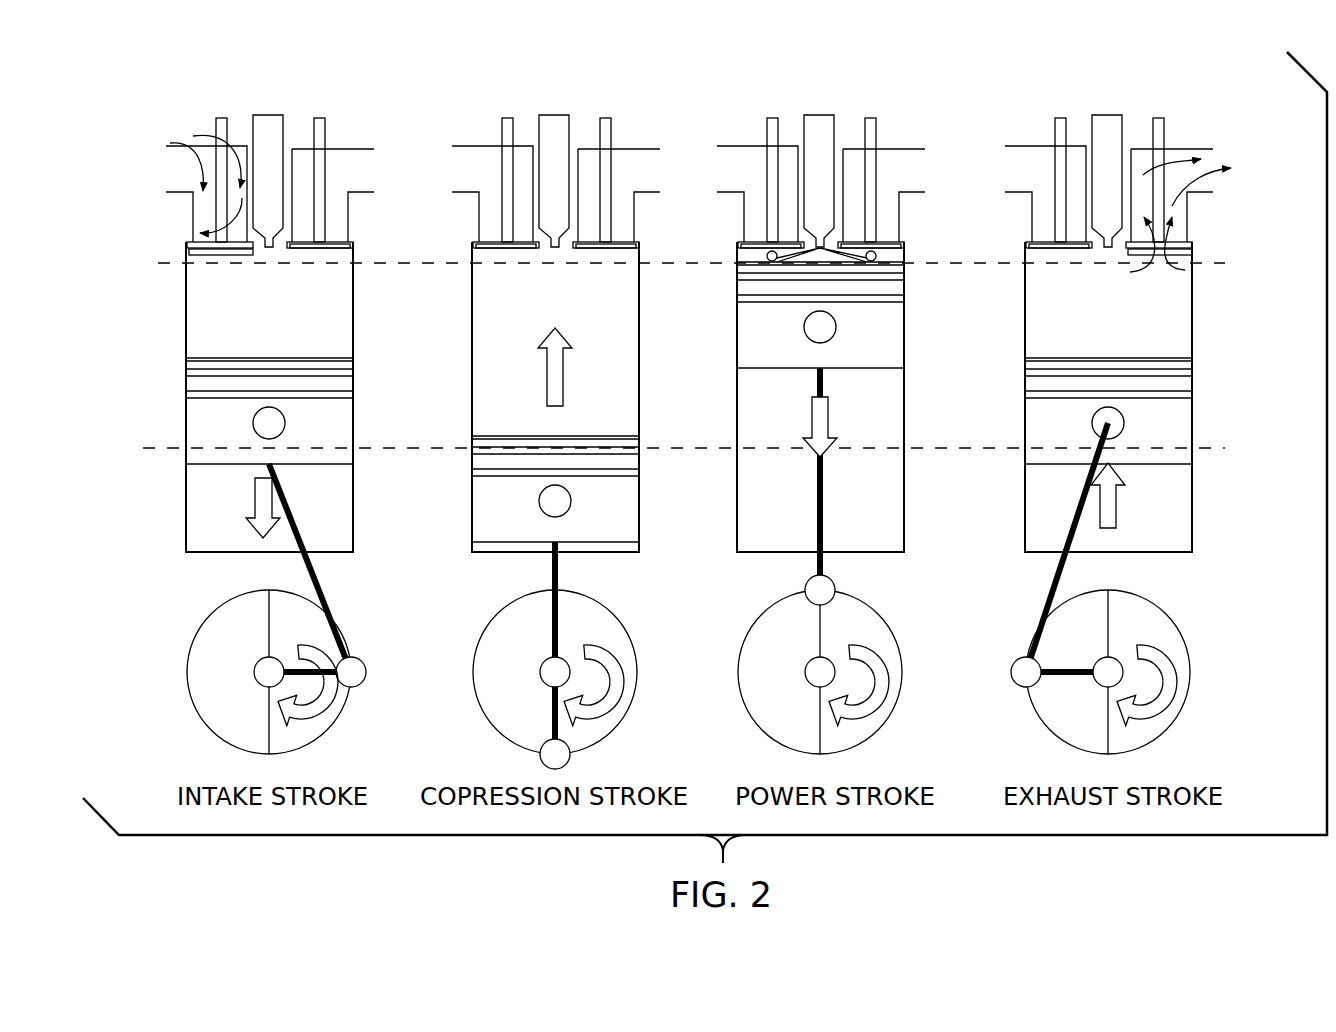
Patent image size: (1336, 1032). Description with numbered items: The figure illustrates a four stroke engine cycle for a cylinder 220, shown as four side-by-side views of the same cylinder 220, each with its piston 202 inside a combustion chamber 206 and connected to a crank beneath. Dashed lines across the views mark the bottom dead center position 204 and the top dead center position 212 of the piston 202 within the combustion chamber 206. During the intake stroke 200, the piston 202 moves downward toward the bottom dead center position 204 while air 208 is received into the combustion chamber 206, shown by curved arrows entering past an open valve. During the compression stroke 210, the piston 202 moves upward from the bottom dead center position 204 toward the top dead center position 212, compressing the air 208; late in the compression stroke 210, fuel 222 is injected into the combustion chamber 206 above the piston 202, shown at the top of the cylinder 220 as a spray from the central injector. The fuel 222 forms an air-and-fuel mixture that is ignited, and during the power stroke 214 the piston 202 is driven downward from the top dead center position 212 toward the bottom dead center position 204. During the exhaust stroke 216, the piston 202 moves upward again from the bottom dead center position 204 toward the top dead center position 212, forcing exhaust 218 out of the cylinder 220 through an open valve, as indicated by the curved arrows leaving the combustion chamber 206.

The intake stroke 200 is at (259, 397).
The compression stroke 210 is at (556, 404).
The power stroke 214 is at (821, 397).
The exhaust stroke 216 is at (1159, 397).
The piston 202 is at (342, 418).
The bottom dead center location or position 204 is at (155, 450).
The combustion chamber 206 is at (241, 323).
The air 208 is at (170, 150).
The top dead center location or position 212 is at (690, 268).
The exhaust 218 is at (1217, 162).
The cylinder 220 is at (166, 313).
The fuel 222 is at (807, 252).